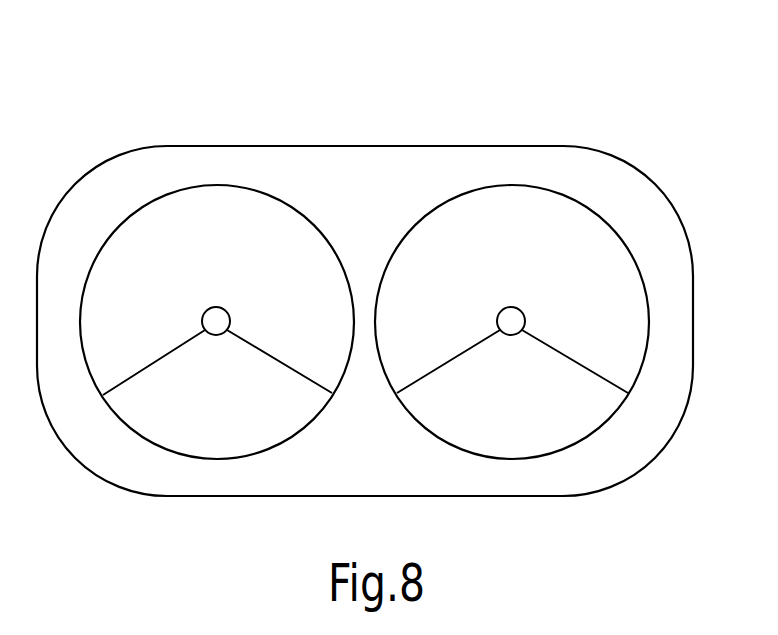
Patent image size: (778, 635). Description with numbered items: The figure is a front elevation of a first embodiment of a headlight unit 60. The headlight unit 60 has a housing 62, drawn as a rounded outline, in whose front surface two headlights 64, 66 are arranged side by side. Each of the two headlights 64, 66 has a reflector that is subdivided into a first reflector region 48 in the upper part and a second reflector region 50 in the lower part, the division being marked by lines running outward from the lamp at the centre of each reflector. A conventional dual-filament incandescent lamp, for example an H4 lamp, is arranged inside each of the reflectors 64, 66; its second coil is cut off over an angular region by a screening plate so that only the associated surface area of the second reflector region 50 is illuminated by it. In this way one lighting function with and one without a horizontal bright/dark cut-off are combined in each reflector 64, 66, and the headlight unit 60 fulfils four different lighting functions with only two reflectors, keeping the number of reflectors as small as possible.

The headlight unit 60 is at (568, 121).
The housing 62 is at (650, 188).
The headlight 64 is at (213, 186).
The headlight 66 is at (507, 186).
The first reflector region 48 is at (206, 272).
The second reflector region 50 is at (206, 400).